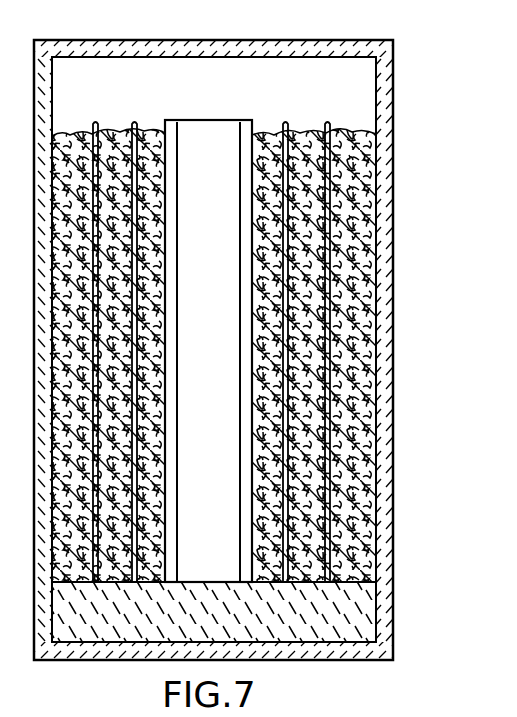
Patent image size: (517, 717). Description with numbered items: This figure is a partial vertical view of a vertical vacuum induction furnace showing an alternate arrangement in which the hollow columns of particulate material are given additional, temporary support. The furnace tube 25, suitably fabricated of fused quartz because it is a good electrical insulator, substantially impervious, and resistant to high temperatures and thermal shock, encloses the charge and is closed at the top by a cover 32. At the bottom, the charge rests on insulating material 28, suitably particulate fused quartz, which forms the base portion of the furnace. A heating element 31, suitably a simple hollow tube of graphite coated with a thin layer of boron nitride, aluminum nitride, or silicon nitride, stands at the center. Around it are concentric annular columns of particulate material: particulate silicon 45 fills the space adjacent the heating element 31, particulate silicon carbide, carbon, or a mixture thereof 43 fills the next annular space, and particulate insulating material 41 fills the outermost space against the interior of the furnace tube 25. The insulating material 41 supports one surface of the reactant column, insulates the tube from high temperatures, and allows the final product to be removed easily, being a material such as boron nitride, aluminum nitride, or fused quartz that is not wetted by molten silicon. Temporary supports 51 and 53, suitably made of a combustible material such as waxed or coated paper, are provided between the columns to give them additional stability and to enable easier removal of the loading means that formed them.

The furnace tube 25 is at (382, 422).
The insulating material 28 is at (372, 602).
The heating element 31 is at (248, 198).
The cover 32 is at (394, 42).
The particulate insulating material 41 is at (380, 176).
The particulate silicon carbide, carbon, or mixtures thereof 43 is at (303, 130).
The particulate silicon 45 is at (262, 268).
The temporary support 51 is at (345, 95).
The temporary support 53 is at (283, 127).